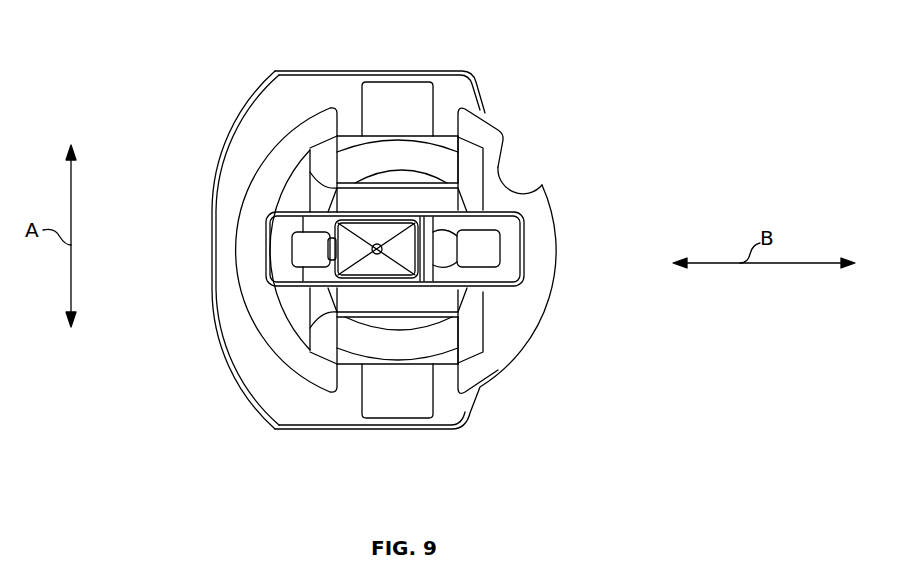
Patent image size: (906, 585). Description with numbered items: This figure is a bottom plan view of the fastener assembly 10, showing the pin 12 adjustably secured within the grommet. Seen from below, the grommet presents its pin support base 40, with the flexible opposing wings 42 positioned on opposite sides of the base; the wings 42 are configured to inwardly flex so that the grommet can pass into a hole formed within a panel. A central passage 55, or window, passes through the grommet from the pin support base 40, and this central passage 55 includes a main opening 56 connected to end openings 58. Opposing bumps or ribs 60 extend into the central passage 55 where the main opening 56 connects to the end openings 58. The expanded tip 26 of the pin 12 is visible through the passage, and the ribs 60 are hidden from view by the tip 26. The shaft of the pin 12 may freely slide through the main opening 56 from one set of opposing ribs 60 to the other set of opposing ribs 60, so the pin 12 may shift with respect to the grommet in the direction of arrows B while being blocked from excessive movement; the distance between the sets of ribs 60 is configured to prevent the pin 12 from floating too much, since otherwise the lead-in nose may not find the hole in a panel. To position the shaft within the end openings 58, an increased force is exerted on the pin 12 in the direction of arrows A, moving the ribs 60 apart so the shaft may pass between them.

The fastener assembly 10 is at (213, 72).
The pin 12 is at (440, 213).
The expanded tip 26 is at (369, 226).
The pin support base 40 is at (218, 319).
The wings 42 is at (403, 92).
The central passage 55 is at (446, 238).
The main opening 56 is at (445, 287).
The end openings 58 is at (303, 250).
The ribs 60 is at (488, 248).